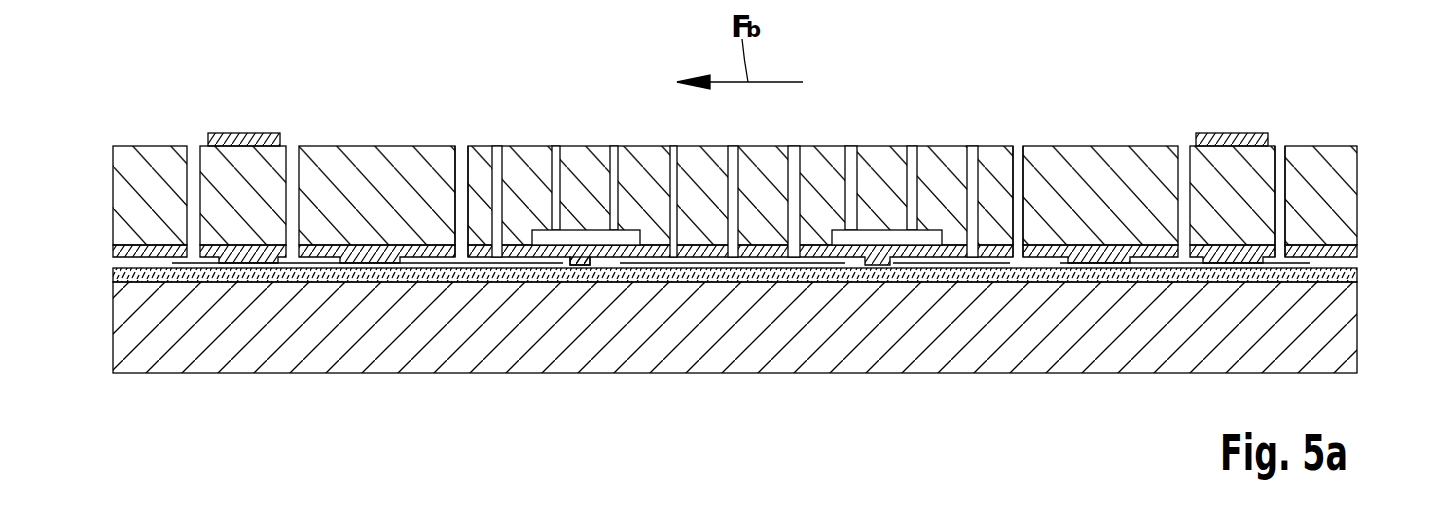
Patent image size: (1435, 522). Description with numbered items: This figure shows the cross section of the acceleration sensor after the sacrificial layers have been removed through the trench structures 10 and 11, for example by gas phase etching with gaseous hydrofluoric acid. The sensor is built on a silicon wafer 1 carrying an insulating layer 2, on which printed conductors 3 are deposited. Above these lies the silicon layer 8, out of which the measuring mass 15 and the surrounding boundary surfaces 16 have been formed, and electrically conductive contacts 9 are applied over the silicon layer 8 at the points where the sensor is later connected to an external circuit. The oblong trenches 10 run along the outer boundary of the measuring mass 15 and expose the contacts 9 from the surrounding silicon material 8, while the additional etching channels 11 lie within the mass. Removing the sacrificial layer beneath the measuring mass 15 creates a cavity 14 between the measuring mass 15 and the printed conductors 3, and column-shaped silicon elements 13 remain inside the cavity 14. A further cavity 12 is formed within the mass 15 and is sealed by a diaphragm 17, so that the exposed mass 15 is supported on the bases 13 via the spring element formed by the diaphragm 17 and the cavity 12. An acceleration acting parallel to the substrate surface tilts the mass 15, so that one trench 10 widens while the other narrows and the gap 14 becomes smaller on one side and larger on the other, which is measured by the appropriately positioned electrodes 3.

The silicon wafer 1 is at (1347, 340).
The insulating layer 2 is at (1353, 273).
The printed conductors 3 is at (1310, 265).
The silicon layer 8 is at (1343, 197).
The electrically conductive contacts 9 is at (244, 133).
The oblong trenches 10 is at (1018, 177).
The etching channels 11 is at (910, 167).
The cavity 12 is at (585, 236).
The column-shaped elements 13 is at (590, 262).
The cavity 14 is at (750, 262).
The measuring mass 15 is at (582, 162).
The boundary surfaces 16 is at (465, 190).
The diaphragm 17 is at (549, 263).